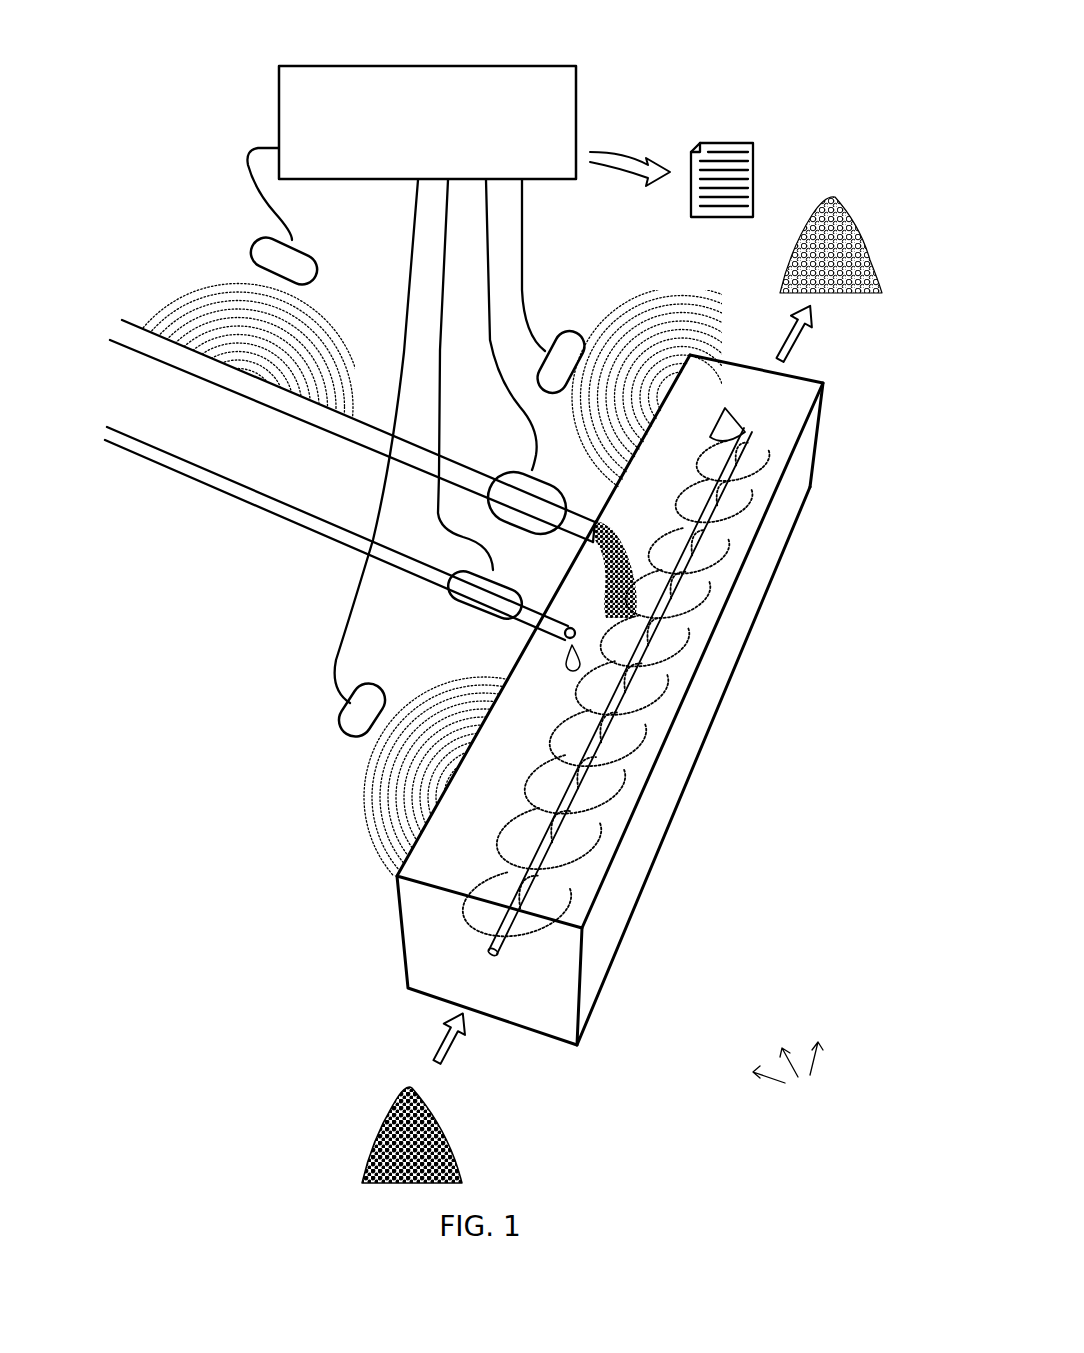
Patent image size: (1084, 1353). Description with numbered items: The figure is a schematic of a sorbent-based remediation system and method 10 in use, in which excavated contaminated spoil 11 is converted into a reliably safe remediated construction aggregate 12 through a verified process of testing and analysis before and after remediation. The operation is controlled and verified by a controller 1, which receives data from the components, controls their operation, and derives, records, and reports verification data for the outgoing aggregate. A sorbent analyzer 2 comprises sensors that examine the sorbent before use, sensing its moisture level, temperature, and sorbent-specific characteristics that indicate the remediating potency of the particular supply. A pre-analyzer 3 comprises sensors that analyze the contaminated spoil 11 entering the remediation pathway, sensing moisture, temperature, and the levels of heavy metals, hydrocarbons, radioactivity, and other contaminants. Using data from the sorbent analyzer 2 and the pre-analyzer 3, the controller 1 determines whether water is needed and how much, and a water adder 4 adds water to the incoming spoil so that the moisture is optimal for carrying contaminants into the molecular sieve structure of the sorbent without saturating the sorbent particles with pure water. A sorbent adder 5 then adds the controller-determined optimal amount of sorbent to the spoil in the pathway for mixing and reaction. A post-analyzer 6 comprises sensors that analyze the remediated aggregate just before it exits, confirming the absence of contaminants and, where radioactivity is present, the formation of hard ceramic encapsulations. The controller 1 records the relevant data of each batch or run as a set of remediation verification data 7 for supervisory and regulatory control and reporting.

The controller 1 is at (565, 104).
The sorbent analyzer 2 is at (312, 262).
The pre-analyzer 3 is at (375, 688).
The water adder 4 is at (462, 603).
The sorbent adder 5 is at (515, 472).
The post-analyzer 6 is at (580, 332).
The remediation verification data 7 is at (733, 147).
The system and method 10 is at (788, 1074).
The excavated contaminated spoil 11 is at (466, 1116).
The remediated construction aggregate 12 is at (857, 196).